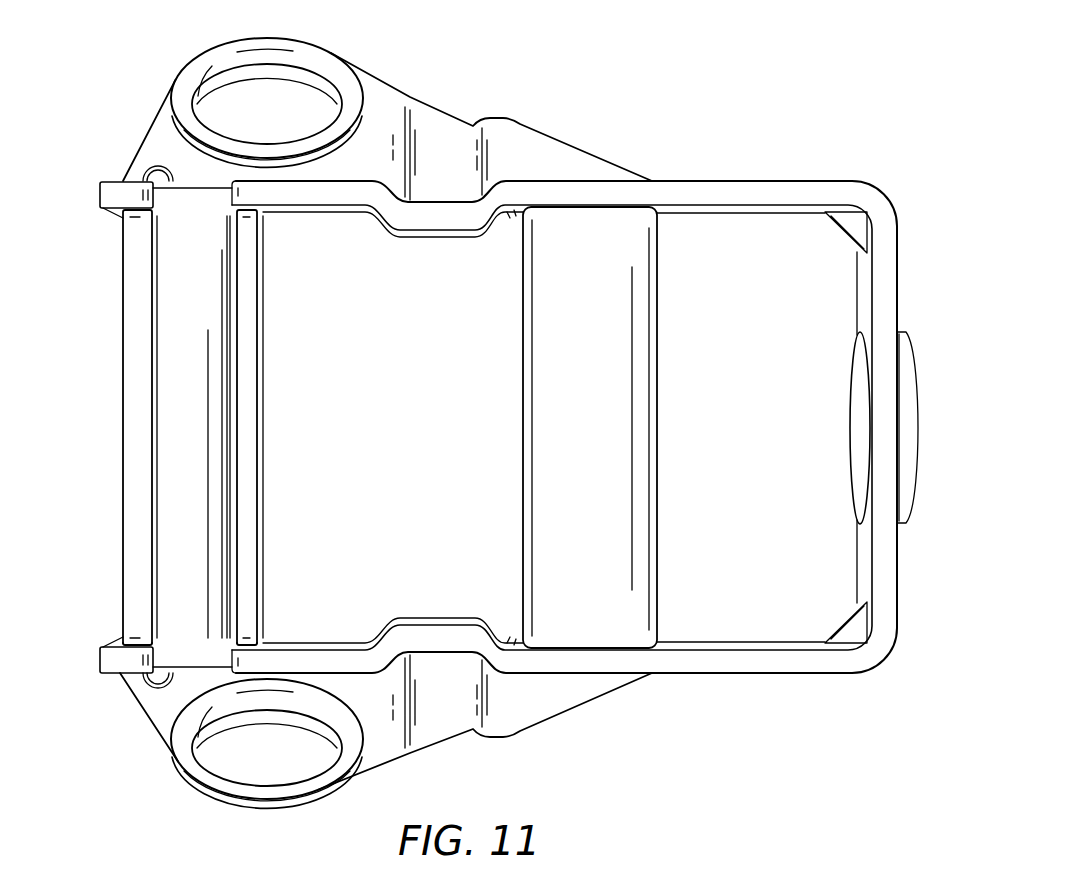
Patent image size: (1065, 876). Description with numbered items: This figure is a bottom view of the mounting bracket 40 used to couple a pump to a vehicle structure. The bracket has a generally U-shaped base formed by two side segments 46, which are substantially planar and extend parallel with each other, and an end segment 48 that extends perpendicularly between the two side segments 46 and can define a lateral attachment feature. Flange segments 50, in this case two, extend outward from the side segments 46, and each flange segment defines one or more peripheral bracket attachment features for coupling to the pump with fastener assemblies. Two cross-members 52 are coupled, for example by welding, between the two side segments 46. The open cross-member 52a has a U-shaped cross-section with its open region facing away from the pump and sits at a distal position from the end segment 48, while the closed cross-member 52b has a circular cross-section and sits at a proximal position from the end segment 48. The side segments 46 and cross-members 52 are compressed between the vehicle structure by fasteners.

The mounting bracket 40 is at (106, 106).
The side segments 46 is at (762, 195).
The end segment 48 is at (873, 277).
The flange segments 50 is at (147, 153).
The cross-members 52 is at (407, 427).
The open cross-member 52a is at (183, 317).
The closed cross-member 52b is at (608, 320).